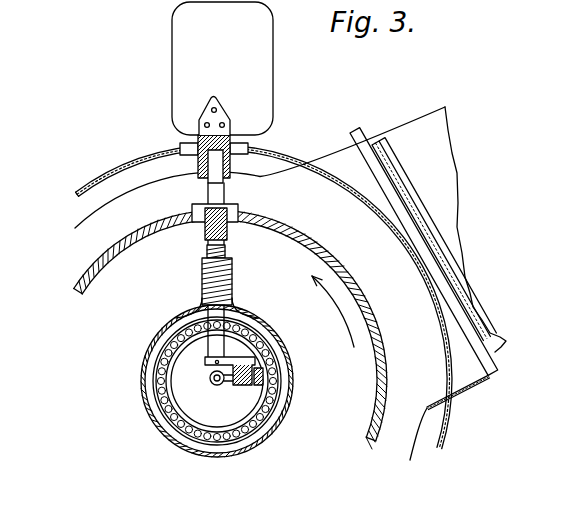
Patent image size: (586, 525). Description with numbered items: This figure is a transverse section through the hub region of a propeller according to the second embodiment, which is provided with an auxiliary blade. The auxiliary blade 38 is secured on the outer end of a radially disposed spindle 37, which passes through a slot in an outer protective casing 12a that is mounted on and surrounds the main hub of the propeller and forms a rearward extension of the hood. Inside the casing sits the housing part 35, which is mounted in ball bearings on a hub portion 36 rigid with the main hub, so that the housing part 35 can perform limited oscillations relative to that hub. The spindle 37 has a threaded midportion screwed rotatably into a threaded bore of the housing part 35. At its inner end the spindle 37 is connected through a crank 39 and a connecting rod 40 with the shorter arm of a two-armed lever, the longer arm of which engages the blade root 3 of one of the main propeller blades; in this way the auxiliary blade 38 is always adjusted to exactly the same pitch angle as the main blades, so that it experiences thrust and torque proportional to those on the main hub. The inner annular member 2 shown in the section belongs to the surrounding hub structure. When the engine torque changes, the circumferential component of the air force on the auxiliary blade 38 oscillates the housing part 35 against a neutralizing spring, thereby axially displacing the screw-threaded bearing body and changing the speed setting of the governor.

The inner rim 2 is at (318, 243).
The blade root 3 is at (345, 154).
The outer protective casing 12a is at (130, 158).
The housing part 35 is at (170, 320).
The hub portion 36 is at (238, 427).
The spindle 37 is at (226, 253).
The auxiliary blade 38 is at (263, 95).
The crank 39 is at (208, 360).
The connecting rod 40 is at (216, 386).